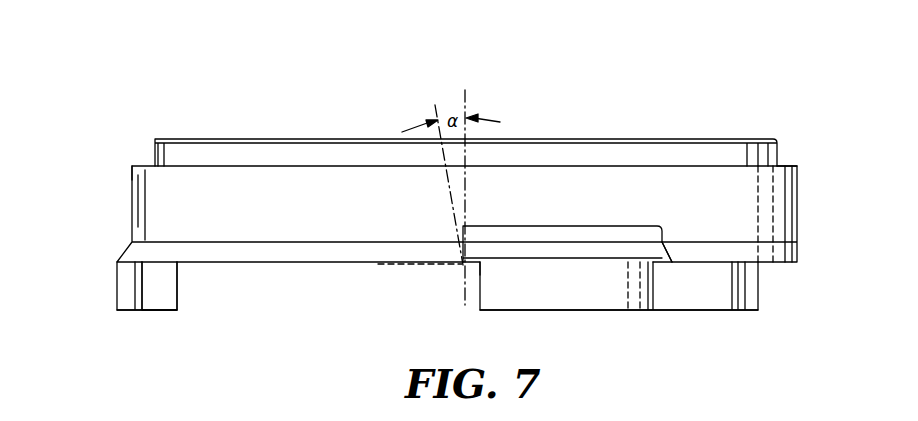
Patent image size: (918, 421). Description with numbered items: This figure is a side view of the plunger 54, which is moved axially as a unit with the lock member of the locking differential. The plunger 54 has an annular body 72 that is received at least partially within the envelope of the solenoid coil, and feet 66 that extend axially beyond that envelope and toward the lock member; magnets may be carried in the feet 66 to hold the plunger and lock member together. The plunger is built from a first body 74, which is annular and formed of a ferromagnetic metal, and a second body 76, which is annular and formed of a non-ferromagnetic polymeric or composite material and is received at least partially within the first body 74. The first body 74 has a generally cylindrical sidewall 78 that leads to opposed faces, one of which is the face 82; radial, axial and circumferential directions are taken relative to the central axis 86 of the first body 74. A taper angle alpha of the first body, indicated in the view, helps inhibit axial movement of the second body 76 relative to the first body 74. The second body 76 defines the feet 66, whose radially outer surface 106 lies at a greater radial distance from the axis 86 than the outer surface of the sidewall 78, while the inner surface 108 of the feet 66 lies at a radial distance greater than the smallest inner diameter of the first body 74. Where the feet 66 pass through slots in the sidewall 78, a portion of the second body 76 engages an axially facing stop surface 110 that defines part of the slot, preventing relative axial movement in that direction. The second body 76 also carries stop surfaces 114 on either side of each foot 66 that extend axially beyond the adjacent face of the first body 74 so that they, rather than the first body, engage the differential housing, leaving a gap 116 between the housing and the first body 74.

The plunger 54 is at (717, 95).
The feet 66 is at (125, 310).
The annular body 72 is at (132, 208).
The first body 74 is at (148, 176).
The second body 76 is at (200, 150).
The sidewall 78 is at (753, 207).
The face 82 is at (785, 163).
The central axis 86 is at (465, 100).
The radially outer surface 106 is at (115, 277).
The inner surface 108 is at (168, 290).
The stop surface 110 is at (547, 233).
The stop surface 114 is at (468, 265).
The gap 116 is at (418, 230).